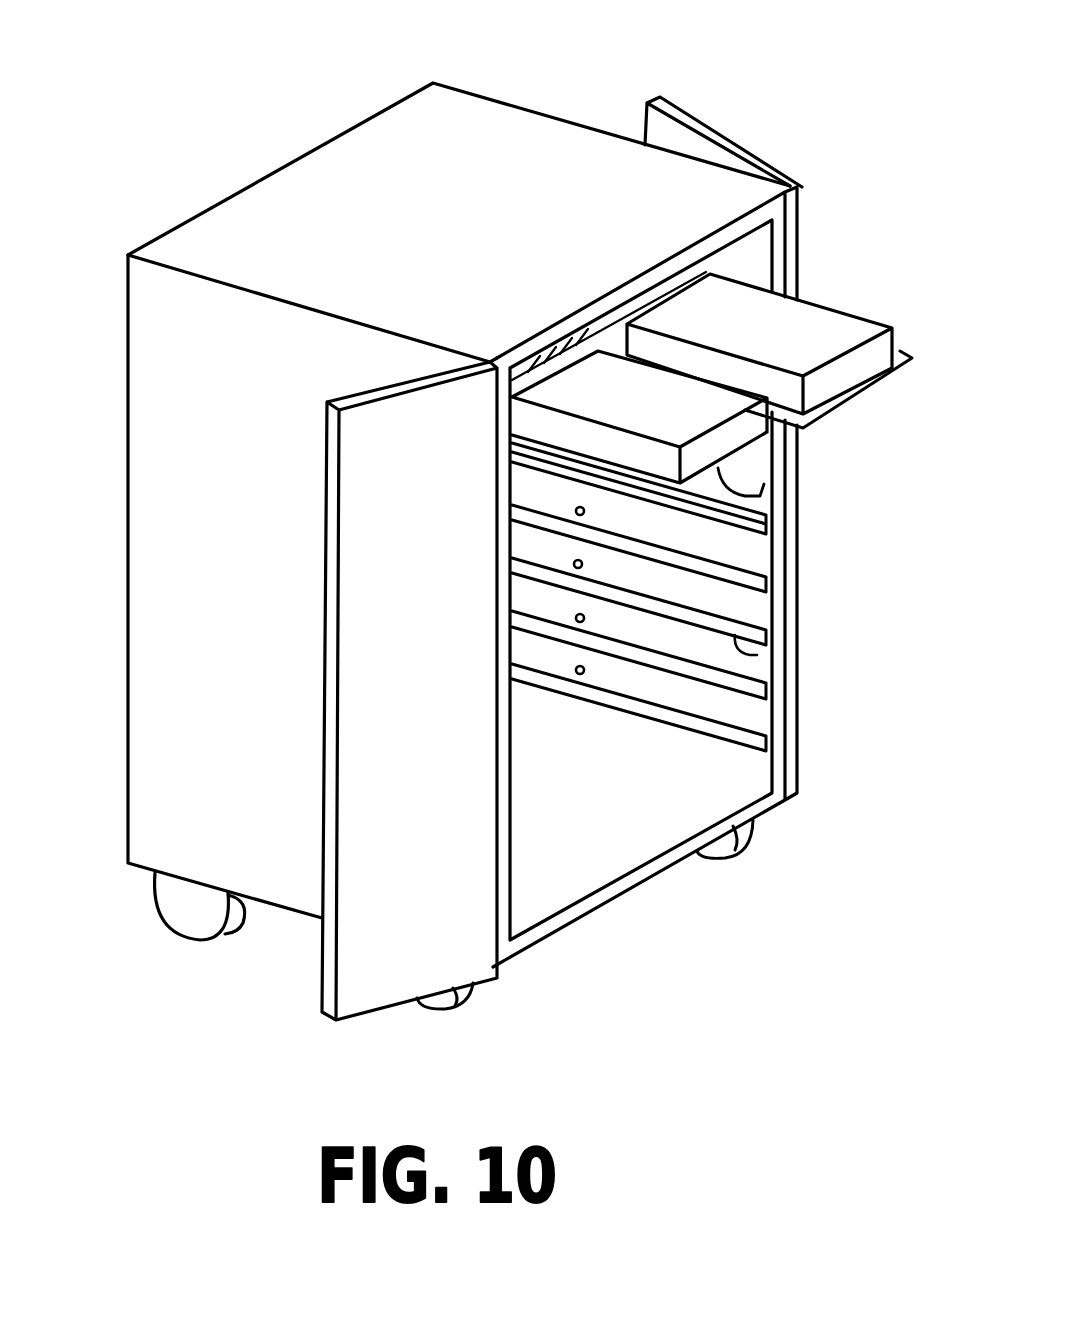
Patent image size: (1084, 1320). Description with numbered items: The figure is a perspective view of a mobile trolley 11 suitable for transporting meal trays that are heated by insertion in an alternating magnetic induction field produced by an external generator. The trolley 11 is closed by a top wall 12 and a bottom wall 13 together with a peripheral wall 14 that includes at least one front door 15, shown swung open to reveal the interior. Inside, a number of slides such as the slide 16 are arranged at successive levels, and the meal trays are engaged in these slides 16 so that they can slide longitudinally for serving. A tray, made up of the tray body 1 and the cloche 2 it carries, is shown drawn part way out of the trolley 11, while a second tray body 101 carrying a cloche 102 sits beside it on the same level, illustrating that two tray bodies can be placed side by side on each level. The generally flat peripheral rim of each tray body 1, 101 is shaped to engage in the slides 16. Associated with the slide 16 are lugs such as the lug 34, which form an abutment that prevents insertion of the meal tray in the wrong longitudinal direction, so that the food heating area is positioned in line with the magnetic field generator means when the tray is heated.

The trolley 11 is at (439, 504).
The top wall 12 is at (324, 163).
The peripheral wall 14 is at (183, 405).
The front door 15 is at (370, 977).
The bottom wall 13 is at (280, 917).
The slide 16 is at (757, 655).
The lug 34 is at (582, 565).
The tray body 101 is at (747, 497).
The cloche 102 is at (633, 405).
The cloche 2 is at (843, 330).
The tray body 1 is at (847, 400).